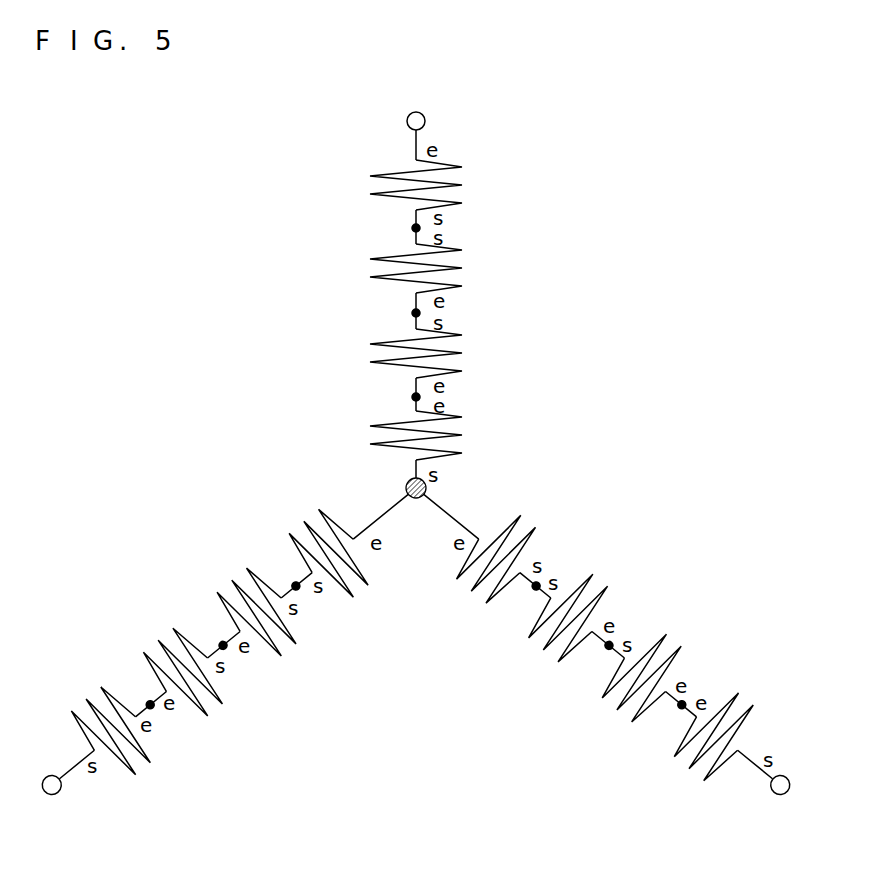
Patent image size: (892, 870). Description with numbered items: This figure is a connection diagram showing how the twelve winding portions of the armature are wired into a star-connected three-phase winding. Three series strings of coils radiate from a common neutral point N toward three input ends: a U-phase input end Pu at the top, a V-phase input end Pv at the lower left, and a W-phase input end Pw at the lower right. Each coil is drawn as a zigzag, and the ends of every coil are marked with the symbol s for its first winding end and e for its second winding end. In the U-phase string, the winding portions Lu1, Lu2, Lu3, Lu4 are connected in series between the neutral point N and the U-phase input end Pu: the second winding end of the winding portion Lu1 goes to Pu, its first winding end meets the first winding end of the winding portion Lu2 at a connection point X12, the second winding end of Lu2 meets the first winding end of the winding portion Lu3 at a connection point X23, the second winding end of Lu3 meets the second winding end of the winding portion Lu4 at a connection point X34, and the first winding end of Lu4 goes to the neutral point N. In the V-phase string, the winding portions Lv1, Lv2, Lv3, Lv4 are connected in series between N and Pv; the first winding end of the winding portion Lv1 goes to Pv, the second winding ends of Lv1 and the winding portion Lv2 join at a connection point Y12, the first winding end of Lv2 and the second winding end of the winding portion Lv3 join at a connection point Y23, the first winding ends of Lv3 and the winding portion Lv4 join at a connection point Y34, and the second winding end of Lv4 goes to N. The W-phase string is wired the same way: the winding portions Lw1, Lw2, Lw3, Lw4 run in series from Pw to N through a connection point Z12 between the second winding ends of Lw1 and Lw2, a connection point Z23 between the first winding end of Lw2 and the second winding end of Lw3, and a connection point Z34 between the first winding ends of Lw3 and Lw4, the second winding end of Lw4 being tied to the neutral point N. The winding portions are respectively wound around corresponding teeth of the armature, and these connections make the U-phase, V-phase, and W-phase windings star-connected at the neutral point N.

The neutral point N is at (406, 486).
The U-phase input end Pu is at (418, 105).
The V-phase input end Pv is at (44, 799).
The W-phase input end Pw is at (795, 799).
The winding portion Lu1 is at (467, 187).
The winding portion Lu2 is at (467, 272).
The winding portion Lu3 is at (467, 357).
The winding portion Lu4 is at (467, 443).
The winding portion Lv1 is at (140, 767).
The winding portion Lv2 is at (210, 708).
The winding portion Lv3 is at (288, 648).
The winding portion Lv4 is at (358, 590).
The winding portion Lw1 is at (742, 698).
The winding portion Lw2 is at (673, 643).
The winding portion Lw3 is at (597, 580).
The winding portion Lw4 is at (528, 523).
The connection point X12 is at (412, 228).
The connection point X23 is at (412, 313).
The connection point X34 is at (412, 397).
The connection point Y12 is at (144, 699).
The connection point Y23 is at (218, 642).
The connection point Y34 is at (293, 583).
The connection point Z12 is at (679, 710).
The connection point Z23 is at (607, 650).
The connection point Z34 is at (533, 592).